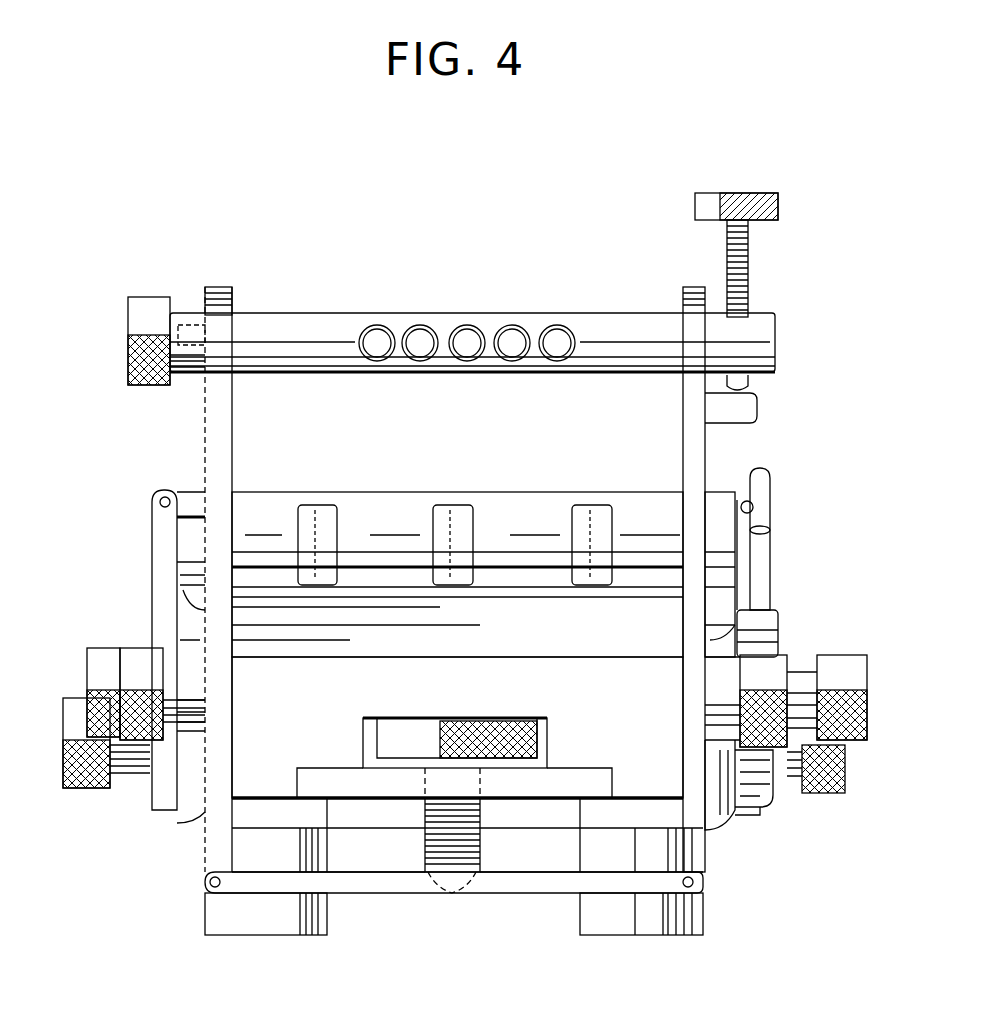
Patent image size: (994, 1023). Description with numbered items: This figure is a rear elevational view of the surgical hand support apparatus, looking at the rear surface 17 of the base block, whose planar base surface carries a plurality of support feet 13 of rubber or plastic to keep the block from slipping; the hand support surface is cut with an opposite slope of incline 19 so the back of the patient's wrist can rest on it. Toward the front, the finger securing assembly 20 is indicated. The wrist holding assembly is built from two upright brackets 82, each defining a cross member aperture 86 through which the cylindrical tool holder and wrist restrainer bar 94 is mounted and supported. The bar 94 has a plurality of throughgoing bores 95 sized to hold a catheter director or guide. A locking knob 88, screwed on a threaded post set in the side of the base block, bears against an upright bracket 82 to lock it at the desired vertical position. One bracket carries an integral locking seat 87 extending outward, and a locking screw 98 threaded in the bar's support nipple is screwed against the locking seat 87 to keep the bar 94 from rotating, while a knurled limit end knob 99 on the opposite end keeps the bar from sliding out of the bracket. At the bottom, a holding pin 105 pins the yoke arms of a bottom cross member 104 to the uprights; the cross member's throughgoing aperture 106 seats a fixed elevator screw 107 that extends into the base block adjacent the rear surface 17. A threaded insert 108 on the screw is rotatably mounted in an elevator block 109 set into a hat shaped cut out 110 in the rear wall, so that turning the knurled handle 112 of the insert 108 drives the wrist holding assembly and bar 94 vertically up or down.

The support feet 13 is at (704, 917).
The rear surface 17 is at (607, 729).
The opposite slope of incline 19 is at (540, 636).
The finger securing assembly 20 is at (130, 548).
The upright bracket 82 is at (205, 432).
The cross member aperture 86 is at (226, 302).
The locking seat 87 is at (757, 400).
The locking knob 88 is at (787, 662).
The tool holder and wrist restrainer bar 94 is at (343, 313).
The throughgoing bores 95 is at (562, 340).
The locking screw 98 is at (750, 248).
The knurled limit end knob 99 is at (128, 330).
The bottom cross member 104 is at (650, 893).
The holding pin 105 is at (700, 880).
The throughgoing aperture 106 is at (445, 893).
The elevator screw 107 is at (480, 852).
The threaded insert 108 is at (425, 787).
The elevator block 109 is at (525, 793).
The hat shaped cut out 110 is at (297, 786).
The knurled handle 112 is at (376, 738).